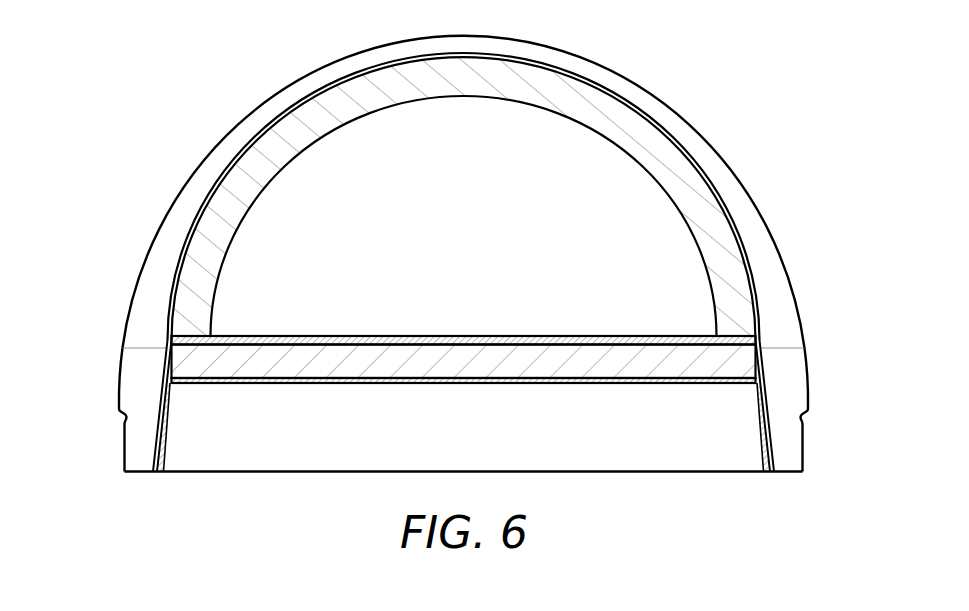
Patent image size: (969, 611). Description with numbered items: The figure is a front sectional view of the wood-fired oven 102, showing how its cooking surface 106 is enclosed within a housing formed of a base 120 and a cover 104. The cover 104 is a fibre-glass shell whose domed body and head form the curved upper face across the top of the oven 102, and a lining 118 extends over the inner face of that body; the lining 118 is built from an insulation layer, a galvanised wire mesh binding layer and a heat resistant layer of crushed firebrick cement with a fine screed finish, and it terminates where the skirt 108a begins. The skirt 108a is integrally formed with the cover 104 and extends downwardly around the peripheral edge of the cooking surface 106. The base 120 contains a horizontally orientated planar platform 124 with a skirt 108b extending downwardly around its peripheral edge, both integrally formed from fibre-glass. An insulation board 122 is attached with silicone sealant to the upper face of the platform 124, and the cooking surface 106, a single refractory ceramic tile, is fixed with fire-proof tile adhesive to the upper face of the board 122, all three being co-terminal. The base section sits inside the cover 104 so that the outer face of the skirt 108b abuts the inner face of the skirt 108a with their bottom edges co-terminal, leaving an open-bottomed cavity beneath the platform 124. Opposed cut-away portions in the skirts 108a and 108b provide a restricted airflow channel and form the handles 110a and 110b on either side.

The wood-fired oven 102 is at (226, 80).
The cover 104 is at (663, 110).
The cooking surface 106 is at (522, 342).
The skirt of cover 108a is at (128, 380).
The skirt of base 108b is at (798, 380).
The handle 110a is at (125, 435).
The handle 110b is at (802, 435).
The lining 118 is at (710, 225).
The base 120 is at (349, 383).
The insulation board 122 is at (403, 358).
The platform 124 is at (583, 383).